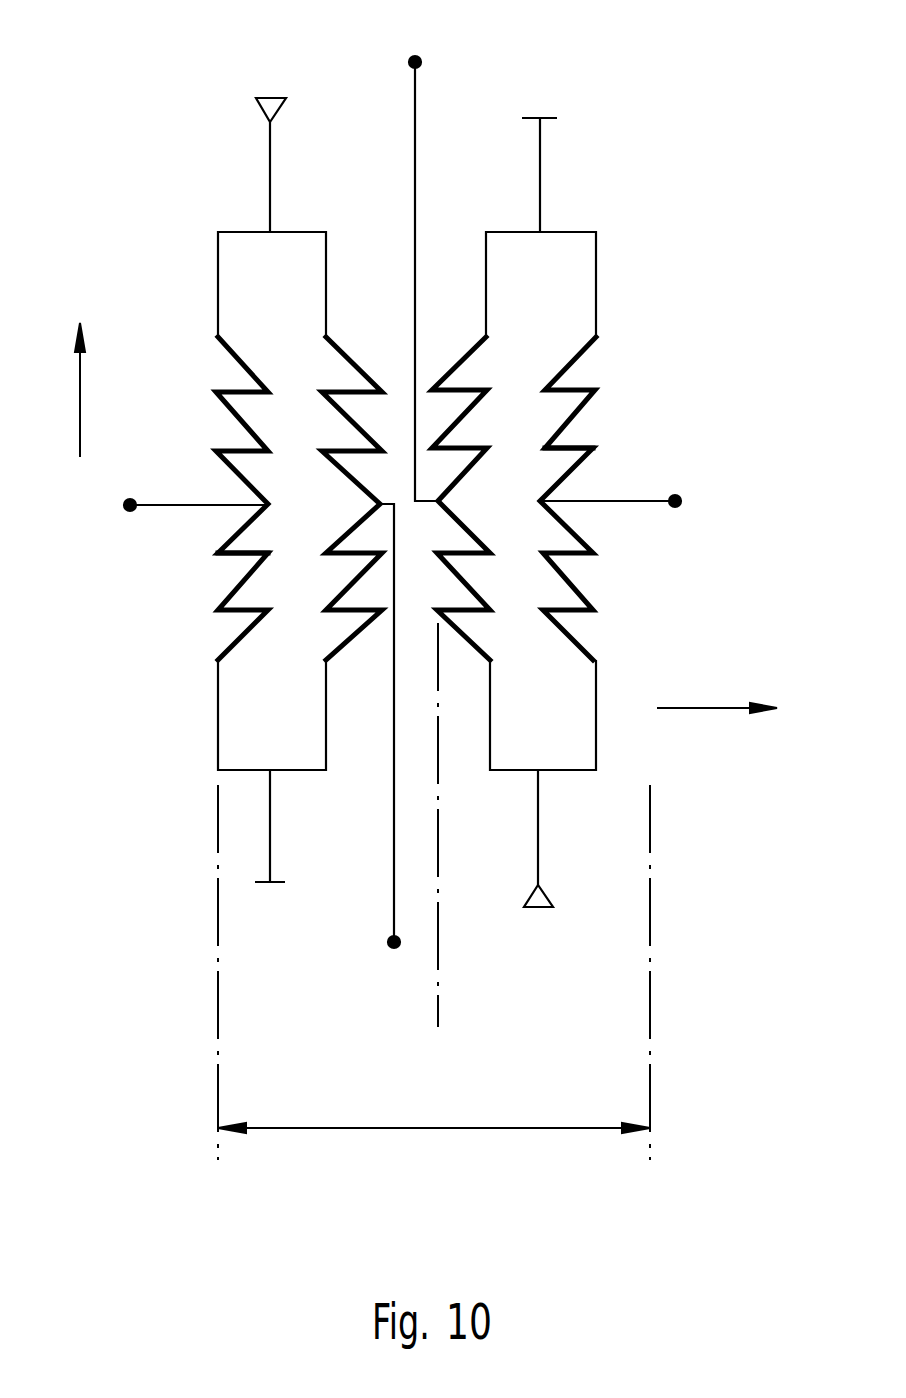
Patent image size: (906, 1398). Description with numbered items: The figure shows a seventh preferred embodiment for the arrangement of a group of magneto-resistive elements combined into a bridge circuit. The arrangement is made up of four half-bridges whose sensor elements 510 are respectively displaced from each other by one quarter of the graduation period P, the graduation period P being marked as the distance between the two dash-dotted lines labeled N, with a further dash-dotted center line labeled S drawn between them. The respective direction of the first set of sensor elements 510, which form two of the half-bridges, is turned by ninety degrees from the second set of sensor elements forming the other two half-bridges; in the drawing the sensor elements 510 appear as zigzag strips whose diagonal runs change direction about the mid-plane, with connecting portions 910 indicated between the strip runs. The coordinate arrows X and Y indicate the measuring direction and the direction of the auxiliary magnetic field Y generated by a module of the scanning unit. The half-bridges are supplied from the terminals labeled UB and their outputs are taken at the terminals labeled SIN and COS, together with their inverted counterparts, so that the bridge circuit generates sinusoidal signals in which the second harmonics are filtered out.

The sensor elements 510 is at (240, 368).
The connecting section of magnetoresistive strip 910 is at (240, 558).
The supply voltage terminal UB is at (270, 98).
The sine signal terminal SIN is at (415, 58).
The cosine signal terminal COS is at (559, 740).
The X axis X is at (717, 688).
The auxiliary magnetic field Y is at (68, 390).
The pole boundary line N is at (434, 996).
The pole center line S is at (441, 848).
The graduation period P is at (434, 1107).